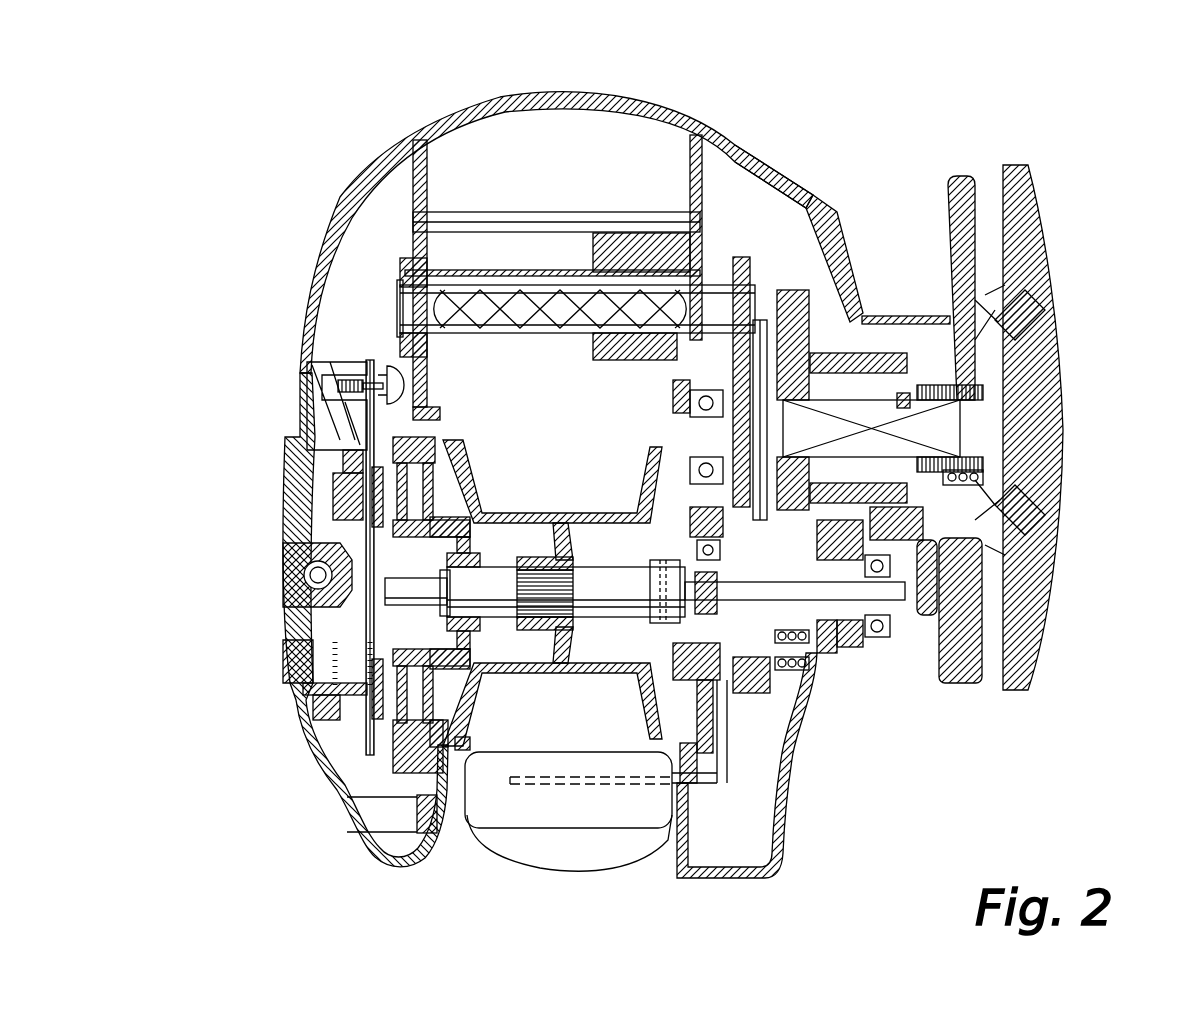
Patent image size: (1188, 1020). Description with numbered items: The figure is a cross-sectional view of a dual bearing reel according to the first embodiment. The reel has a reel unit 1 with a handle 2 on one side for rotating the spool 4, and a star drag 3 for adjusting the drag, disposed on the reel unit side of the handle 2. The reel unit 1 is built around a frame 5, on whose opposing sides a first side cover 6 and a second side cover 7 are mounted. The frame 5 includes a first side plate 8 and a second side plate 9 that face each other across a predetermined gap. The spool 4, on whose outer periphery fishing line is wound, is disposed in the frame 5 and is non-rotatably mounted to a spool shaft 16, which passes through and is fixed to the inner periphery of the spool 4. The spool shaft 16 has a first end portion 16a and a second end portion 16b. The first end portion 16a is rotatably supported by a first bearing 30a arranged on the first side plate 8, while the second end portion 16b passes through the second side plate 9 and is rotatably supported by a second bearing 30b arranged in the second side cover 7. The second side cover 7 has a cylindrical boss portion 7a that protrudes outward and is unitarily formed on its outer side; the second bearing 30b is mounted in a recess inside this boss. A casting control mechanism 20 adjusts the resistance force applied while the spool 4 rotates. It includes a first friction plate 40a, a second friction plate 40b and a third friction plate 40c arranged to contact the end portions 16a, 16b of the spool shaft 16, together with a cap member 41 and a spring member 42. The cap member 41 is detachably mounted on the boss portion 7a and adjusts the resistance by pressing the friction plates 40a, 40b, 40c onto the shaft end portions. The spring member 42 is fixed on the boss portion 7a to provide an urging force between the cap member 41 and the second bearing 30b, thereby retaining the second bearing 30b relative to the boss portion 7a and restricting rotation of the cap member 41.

The reel unit 1 is at (388, 135).
The handle 2 is at (1050, 165).
The star drag 3 is at (990, 168).
The spool 4 is at (567, 492).
The frame 5 is at (735, 135).
The first side cover 6 is at (325, 350).
The second side cover 7 is at (835, 215).
The boss portion 7a is at (858, 653).
The first side plate 8 is at (398, 380).
The second side plate 9 is at (684, 398).
The spool shaft 16 is at (593, 585).
The first end portion 16a is at (298, 548).
The second end portion 16b is at (842, 650).
The casting control mechanism 20 is at (925, 655).
The first bearing 30a is at (300, 668).
The second bearing 30b is at (885, 655).
The first friction plate 40a is at (292, 598).
The second friction plate 40b is at (886, 593).
The third friction plate 40c is at (895, 606).
The cap member 41 is at (925, 552).
The spring member 42 is at (998, 655).